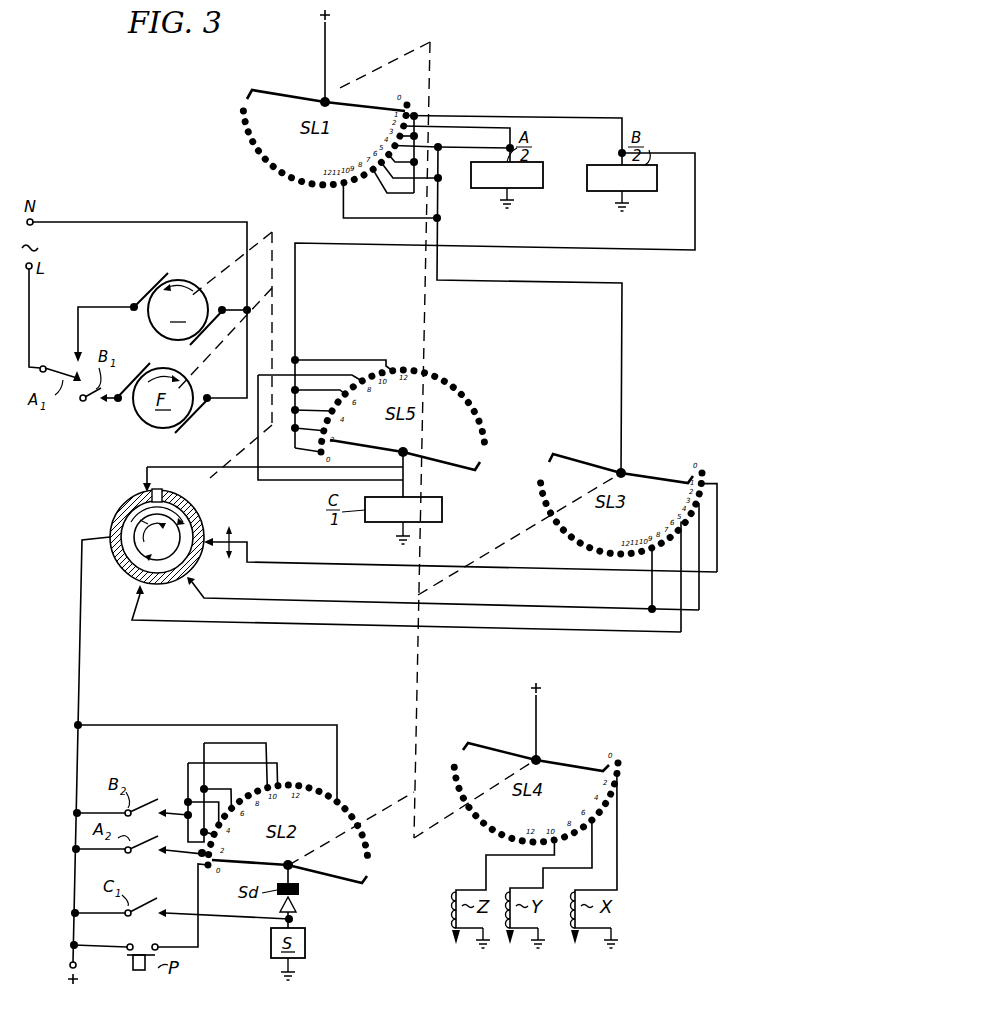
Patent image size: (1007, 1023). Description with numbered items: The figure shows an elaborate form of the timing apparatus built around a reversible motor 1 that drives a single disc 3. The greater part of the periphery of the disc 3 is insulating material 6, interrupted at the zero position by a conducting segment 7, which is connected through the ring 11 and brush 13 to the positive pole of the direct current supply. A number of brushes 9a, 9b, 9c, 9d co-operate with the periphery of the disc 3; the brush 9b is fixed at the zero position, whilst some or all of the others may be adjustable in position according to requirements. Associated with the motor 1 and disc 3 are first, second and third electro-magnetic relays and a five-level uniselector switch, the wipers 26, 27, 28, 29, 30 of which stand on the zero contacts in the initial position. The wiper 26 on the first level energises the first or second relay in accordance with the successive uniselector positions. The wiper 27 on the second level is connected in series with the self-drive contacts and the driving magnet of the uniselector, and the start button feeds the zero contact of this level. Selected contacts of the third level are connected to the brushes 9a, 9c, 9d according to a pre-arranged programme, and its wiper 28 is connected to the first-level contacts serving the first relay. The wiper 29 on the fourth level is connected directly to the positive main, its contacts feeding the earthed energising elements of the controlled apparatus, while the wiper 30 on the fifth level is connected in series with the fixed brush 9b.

The reversible motor 1 is at (184, 270).
The disc 3 is at (164, 548).
The insulating material 6 is at (195, 506).
The conducting segment 7 is at (163, 496).
The brush 9a is at (212, 538).
The brush 9b is at (143, 485).
The brush 9c is at (199, 584).
The brush 9d is at (140, 598).
The ring 11 is at (140, 520).
The brush 13 is at (148, 557).
The wiper 26 is at (368, 100).
The wiper 27 is at (331, 882).
The wiper 28 is at (656, 476).
The wiper 29 is at (575, 768).
The wiper 30 is at (443, 465).